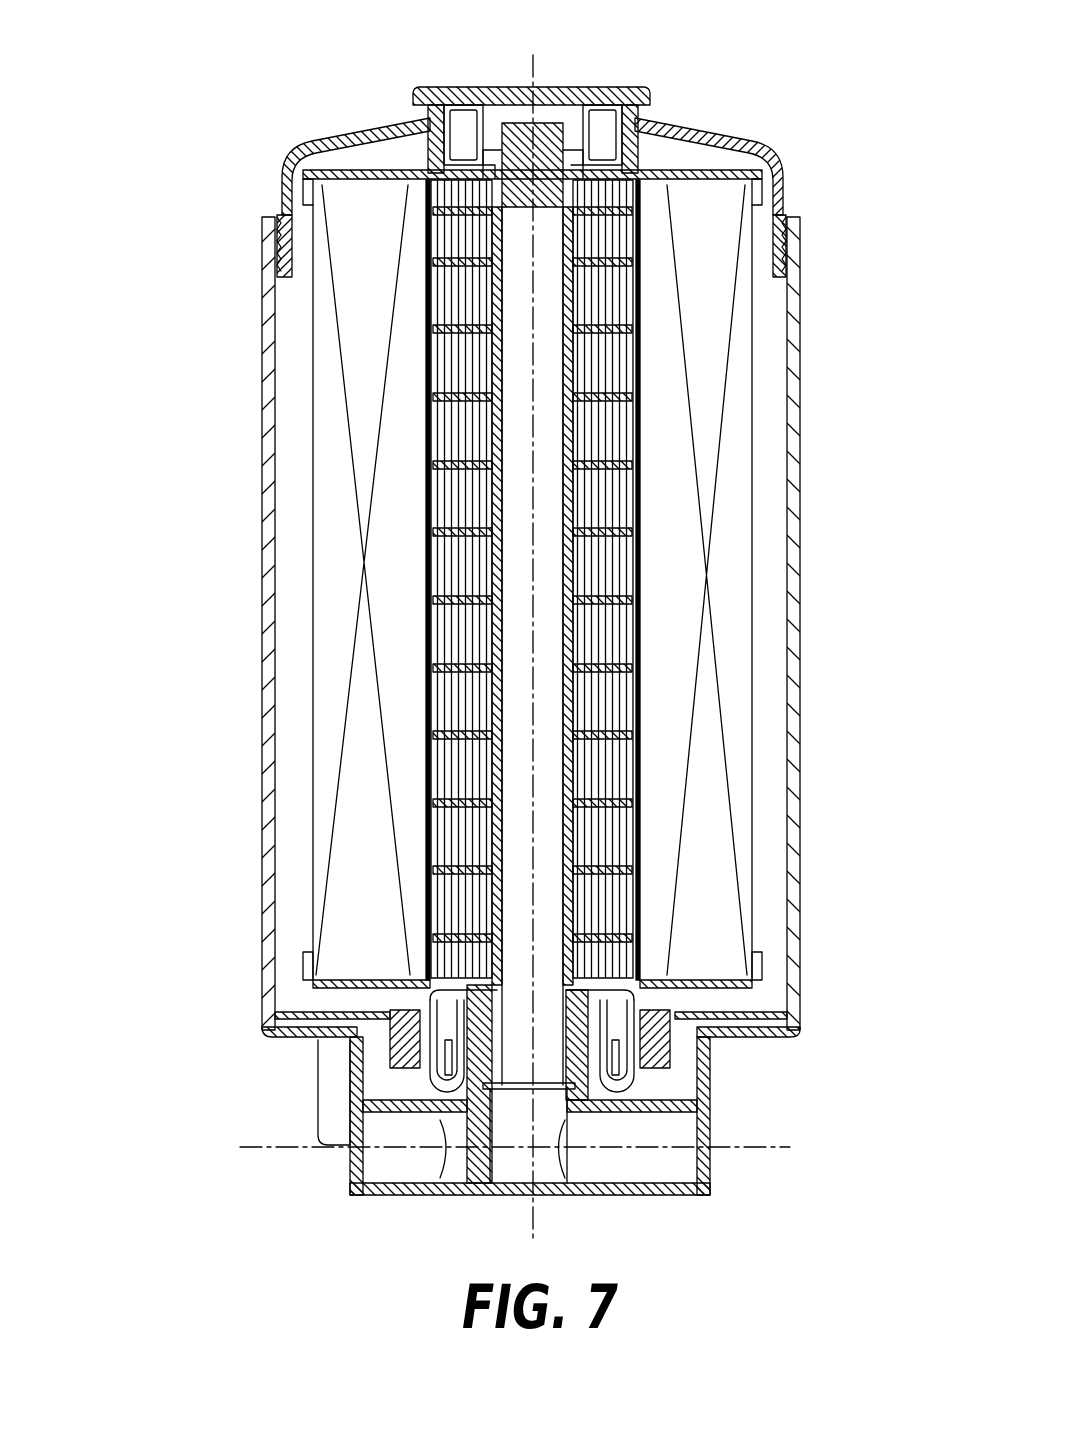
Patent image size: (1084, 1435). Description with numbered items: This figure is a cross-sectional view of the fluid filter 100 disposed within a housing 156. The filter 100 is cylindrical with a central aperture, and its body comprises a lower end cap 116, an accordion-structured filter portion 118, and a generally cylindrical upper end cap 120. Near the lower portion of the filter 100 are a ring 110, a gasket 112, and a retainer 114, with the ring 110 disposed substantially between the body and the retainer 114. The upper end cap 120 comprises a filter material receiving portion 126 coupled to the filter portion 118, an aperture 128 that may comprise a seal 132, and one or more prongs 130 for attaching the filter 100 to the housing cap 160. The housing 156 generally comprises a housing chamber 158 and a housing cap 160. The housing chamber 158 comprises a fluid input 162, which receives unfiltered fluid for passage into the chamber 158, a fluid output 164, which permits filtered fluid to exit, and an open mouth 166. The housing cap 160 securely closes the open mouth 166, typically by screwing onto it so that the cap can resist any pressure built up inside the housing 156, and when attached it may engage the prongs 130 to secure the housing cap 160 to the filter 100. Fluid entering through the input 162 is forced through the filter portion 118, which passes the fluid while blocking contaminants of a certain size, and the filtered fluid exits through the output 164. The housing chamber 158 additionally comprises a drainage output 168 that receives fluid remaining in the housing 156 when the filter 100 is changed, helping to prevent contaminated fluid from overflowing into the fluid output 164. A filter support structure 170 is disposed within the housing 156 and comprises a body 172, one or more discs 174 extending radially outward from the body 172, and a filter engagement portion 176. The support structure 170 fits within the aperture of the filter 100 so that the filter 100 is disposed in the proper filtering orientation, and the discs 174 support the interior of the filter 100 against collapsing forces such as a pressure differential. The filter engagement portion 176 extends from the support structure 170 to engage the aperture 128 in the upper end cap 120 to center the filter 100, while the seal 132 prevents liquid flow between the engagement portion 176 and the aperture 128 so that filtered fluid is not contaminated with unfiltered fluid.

The filter 100 is at (292, 309).
The ring 110 is at (777, 990).
The gasket 112 is at (655, 1043).
The retainer 114 is at (305, 1005).
The lower end cap 116 is at (745, 958).
The filter portion 118 is at (747, 352).
The upper end cap 120 is at (713, 173).
The filter material receiving portion 126 is at (312, 197).
The aperture 128 is at (491, 105).
The prongs 130 is at (447, 96).
The seal 132 is at (478, 104).
The housing 156 is at (230, 384).
The housing chamber 158 is at (265, 664).
The housing cap 160 is at (373, 125).
The fluid input 162 is at (348, 1133).
The fluid output 164 is at (680, 1160).
The open mouth 166 is at (268, 212).
The drainage output 168 is at (377, 1165).
The filter support structure 170 is at (552, 572).
The body 172 is at (565, 497).
The discs 174 is at (638, 773).
The filter engagement portion 176 is at (523, 95).